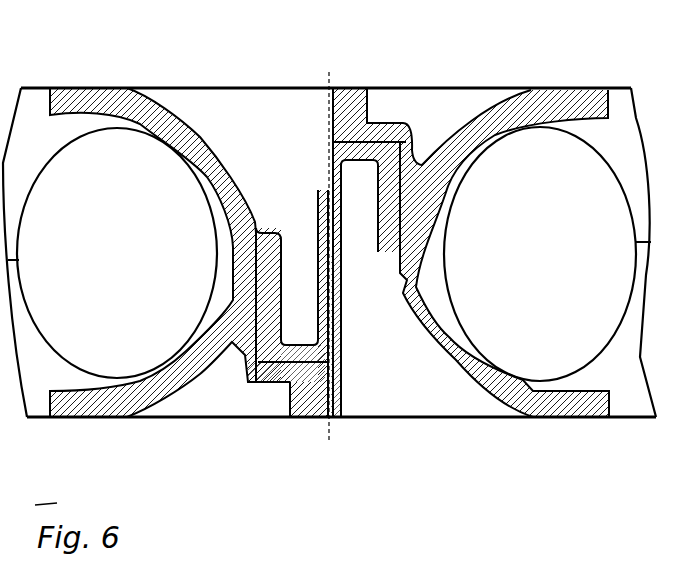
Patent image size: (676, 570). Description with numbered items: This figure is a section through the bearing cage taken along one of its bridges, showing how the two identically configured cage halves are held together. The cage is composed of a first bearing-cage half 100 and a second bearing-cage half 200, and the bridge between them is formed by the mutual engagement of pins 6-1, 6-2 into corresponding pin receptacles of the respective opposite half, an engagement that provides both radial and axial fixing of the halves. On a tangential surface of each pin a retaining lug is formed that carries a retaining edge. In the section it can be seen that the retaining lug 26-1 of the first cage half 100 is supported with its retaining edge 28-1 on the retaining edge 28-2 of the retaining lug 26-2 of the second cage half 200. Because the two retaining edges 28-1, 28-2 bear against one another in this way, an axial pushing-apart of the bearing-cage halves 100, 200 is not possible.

The second bearing-cage half 200 is at (227, 110).
The first bearing-cage half 100 is at (421, 390).
The pin 6-1 is at (353, 185).
The pin 6-2 is at (302, 330).
The retaining lug 26-1 is at (340, 244).
The retaining lug 26-2 is at (332, 248).
The retaining edge 28-1 is at (334, 255).
The retaining edge 28-2 is at (327, 250).